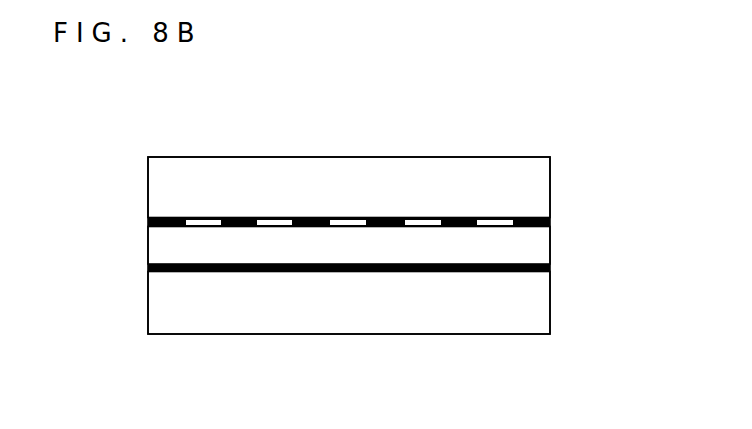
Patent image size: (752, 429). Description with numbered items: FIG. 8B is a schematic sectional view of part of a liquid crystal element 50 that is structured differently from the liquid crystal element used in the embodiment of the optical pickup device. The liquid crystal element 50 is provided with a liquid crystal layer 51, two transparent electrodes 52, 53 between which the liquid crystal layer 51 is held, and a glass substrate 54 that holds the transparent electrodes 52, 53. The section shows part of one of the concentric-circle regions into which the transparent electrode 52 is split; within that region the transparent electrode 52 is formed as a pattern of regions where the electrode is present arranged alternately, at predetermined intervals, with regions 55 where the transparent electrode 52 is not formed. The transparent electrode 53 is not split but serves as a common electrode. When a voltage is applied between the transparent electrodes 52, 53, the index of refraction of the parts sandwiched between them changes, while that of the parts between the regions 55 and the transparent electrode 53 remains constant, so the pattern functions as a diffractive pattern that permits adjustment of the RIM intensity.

The liquid crystal element 50 is at (583, 98).
The liquid crystal layer 51 is at (535, 243).
The transparent electrode 52 is at (550, 218).
The transparent electrode 53 is at (550, 272).
The glass substrate 54 is at (425, 158).
The regions where the transparent electrode is not formed 55 is at (207, 222).